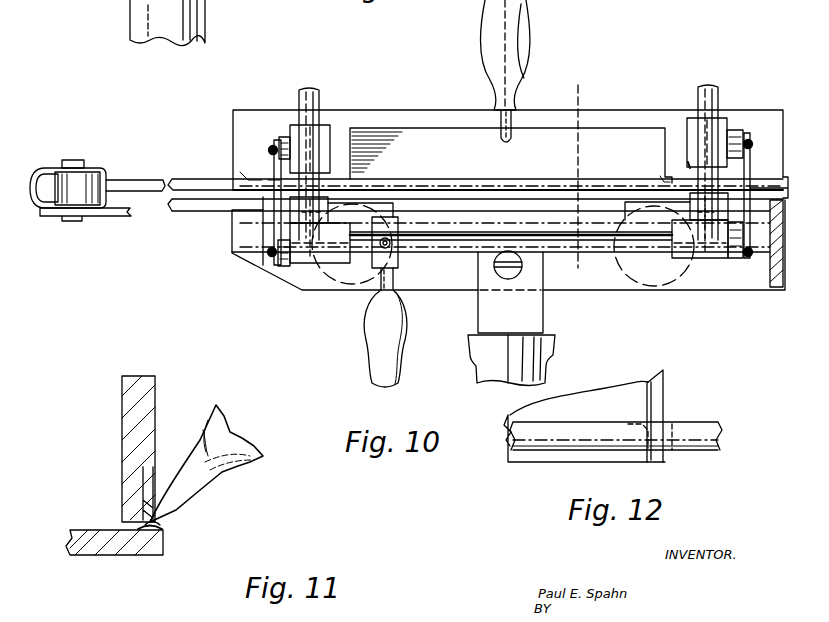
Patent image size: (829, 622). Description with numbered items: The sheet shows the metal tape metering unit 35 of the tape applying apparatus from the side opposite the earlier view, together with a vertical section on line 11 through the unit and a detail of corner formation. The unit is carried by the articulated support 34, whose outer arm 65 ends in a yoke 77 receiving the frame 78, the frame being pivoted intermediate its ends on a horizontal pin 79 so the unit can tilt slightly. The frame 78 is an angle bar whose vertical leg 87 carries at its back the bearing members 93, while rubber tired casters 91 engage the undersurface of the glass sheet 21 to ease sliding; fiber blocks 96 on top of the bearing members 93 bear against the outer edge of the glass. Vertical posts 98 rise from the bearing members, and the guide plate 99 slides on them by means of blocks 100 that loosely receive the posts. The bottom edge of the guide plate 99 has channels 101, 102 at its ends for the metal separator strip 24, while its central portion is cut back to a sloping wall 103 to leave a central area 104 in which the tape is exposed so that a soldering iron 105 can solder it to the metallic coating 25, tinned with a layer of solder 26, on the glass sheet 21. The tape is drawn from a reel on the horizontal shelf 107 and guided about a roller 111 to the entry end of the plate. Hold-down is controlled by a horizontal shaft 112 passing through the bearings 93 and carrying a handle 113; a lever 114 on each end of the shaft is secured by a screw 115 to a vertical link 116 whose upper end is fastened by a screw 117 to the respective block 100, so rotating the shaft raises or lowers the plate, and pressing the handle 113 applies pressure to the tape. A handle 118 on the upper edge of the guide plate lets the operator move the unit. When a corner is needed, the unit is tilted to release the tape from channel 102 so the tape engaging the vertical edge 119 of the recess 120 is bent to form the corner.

In FIG. 10, the section line 11— 11 is at (578, 84).
In FIG. 10, the glass sheet 21 is at (190, 206).
In FIG. 11, the glass sheet 21 is at (85, 538).
In FIG. 12, the glass sheet 21 is at (657, 404).
In FIG. 10, the metal separator strip 24 is at (190, 188).
In FIG. 11, the metal separator strip 24 is at (153, 496).
In FIG. 12, the metal separator strip 24 is at (663, 382).
In FIG. 11, the metallic coating 25 is at (162, 528).
In FIG. 11, the layer of solder 26 is at (160, 524).
In FIG. 10, the articulated support 34 is at (516, 352).
In FIG. 10, the metal tape metering unit 35 is at (580, 54).
In FIG. 10, the arm 65 is at (130, 3).
In FIG. 10, the yoke 77 is at (518, 315).
In FIG. 10, the frame 78 is at (606, 278).
In FIG. 10, the horizontal pin 79 is at (498, 276).
In FIG. 10, the vertical leg 87 is at (345, 292).
In FIG. 10, the rubber tired caster 91 is at (368, 210).
In FIG. 10, the bearing member 93 is at (322, 265).
In FIG. 10, the fiber block 96 is at (276, 205).
In FIG. 10, the vertical post 98 is at (306, 102).
In FIG. 10, the guide plate 99 is at (416, 124).
In FIG. 11, the guide plate 99 is at (140, 396).
In FIG. 12, the guide plate 99 is at (570, 436).
In FIG. 10, the block 100 is at (318, 138).
In FIG. 10, the channel or groove 101 is at (242, 174).
In FIG. 10, the channel or groove 102 is at (752, 166).
In FIG. 12, the channel or groove 102 is at (726, 432).
In FIG. 10, the sloping wall 103 is at (545, 165).
In FIG. 11, the sloping wall 103 is at (148, 470).
In FIG. 10, the central area 104 is at (596, 160).
In FIG. 11, the central area 104 is at (152, 488).
In FIG. 11, the soldering iron 105 is at (225, 450).
In FIG. 10, the horizontal shelf 107 is at (118, 217).
In FIG. 10, the roller 111 is at (100, 176).
In FIG. 10, the horizontal shaft 112 is at (433, 245).
In FIG. 10, the handle 113 is at (405, 364).
In FIG. 10, the lever 114 is at (284, 262).
In FIG. 10, the screw 115 is at (269, 256).
In FIG. 10, the vertical link 116 is at (278, 236).
In FIG. 10, the screw 117 is at (272, 146).
In FIG. 10, the handle 118 is at (512, 26).
In FIG. 10, the vertical edge 119 is at (662, 178).
In FIG. 12, the vertical edge 119 is at (636, 424).
In FIG. 10, the recess 120 is at (689, 165).
In FIG. 12, the recess 120 is at (670, 432).